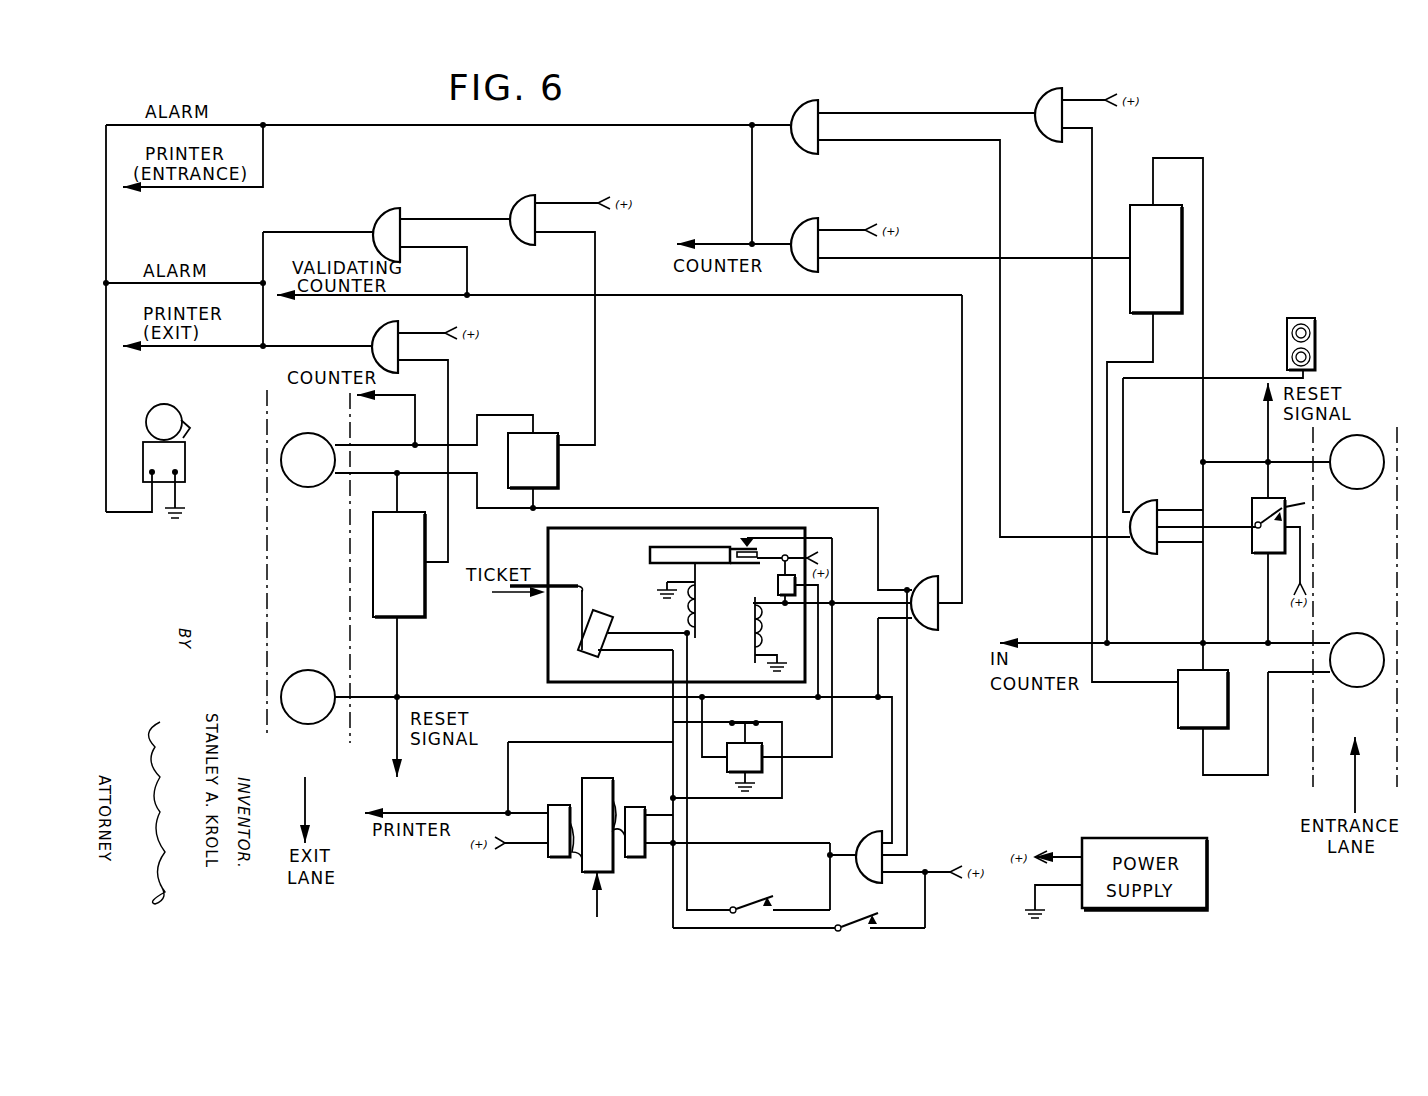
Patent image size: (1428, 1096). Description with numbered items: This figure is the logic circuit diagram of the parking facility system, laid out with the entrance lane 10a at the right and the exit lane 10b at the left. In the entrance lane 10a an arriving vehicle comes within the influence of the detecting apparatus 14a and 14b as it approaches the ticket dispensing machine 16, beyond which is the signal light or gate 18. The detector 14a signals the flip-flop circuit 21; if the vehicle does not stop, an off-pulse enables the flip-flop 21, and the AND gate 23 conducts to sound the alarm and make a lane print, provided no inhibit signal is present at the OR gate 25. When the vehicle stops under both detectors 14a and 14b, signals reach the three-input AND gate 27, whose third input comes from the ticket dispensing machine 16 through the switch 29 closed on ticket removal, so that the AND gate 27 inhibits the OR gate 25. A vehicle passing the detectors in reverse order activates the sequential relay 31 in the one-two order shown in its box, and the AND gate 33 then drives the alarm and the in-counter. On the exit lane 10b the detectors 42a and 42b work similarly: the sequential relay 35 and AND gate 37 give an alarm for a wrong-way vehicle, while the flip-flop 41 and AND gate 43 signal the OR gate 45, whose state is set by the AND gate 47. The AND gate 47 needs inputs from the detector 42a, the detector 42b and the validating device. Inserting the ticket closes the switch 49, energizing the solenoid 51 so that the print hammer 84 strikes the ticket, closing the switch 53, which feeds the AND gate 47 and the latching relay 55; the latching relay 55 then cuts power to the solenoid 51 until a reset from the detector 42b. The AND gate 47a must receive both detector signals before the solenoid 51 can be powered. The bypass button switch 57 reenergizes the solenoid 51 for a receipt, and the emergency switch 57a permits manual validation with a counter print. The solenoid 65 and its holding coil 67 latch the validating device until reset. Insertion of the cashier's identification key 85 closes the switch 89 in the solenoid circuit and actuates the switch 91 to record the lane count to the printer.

The lane 10a is at (1346, 730).
The lane 10b is at (289, 616).
The detecting apparatus 14a is at (1362, 634).
The detecting apparatus 14b is at (1345, 488).
The ticket dispensing machine 16 is at (1255, 556).
The signal light or gate 18 is at (1310, 320).
The flip-flop circuit 21 is at (1178, 730).
The AND gate 23 is at (1066, 92).
The OR gate 25 is at (822, 104).
The AND gate 27 is at (1159, 500).
The switch 29 is at (1255, 513).
The sequential relay 31 is at (1146, 204).
The AND gate 33 is at (822, 222).
The sequential relay 35 is at (410, 617).
The AND gate 37 is at (372, 332).
The flip-flop 41 is at (557, 433).
The detector 42a is at (324, 435).
The detector 42b is at (324, 675).
The AND gate 43 is at (520, 200).
The OR gate 45 is at (385, 213).
The AND gate 47 is at (921, 580).
The AND gate 47a is at (864, 838).
The switch 49 is at (626, 603).
The solenoid 51 is at (702, 610).
The switch 53 is at (738, 544).
The latching relay or gate 55 is at (725, 777).
The bypass button switch 57 is at (752, 900).
The emergency switch 57a is at (862, 919).
The solenoid 65 is at (748, 638).
The holding coil 67 is at (778, 580).
The print hammer 84 is at (644, 556).
The cashier's coded identification key 85 is at (593, 783).
The switch 89 is at (636, 816).
The switch 91 is at (554, 808).